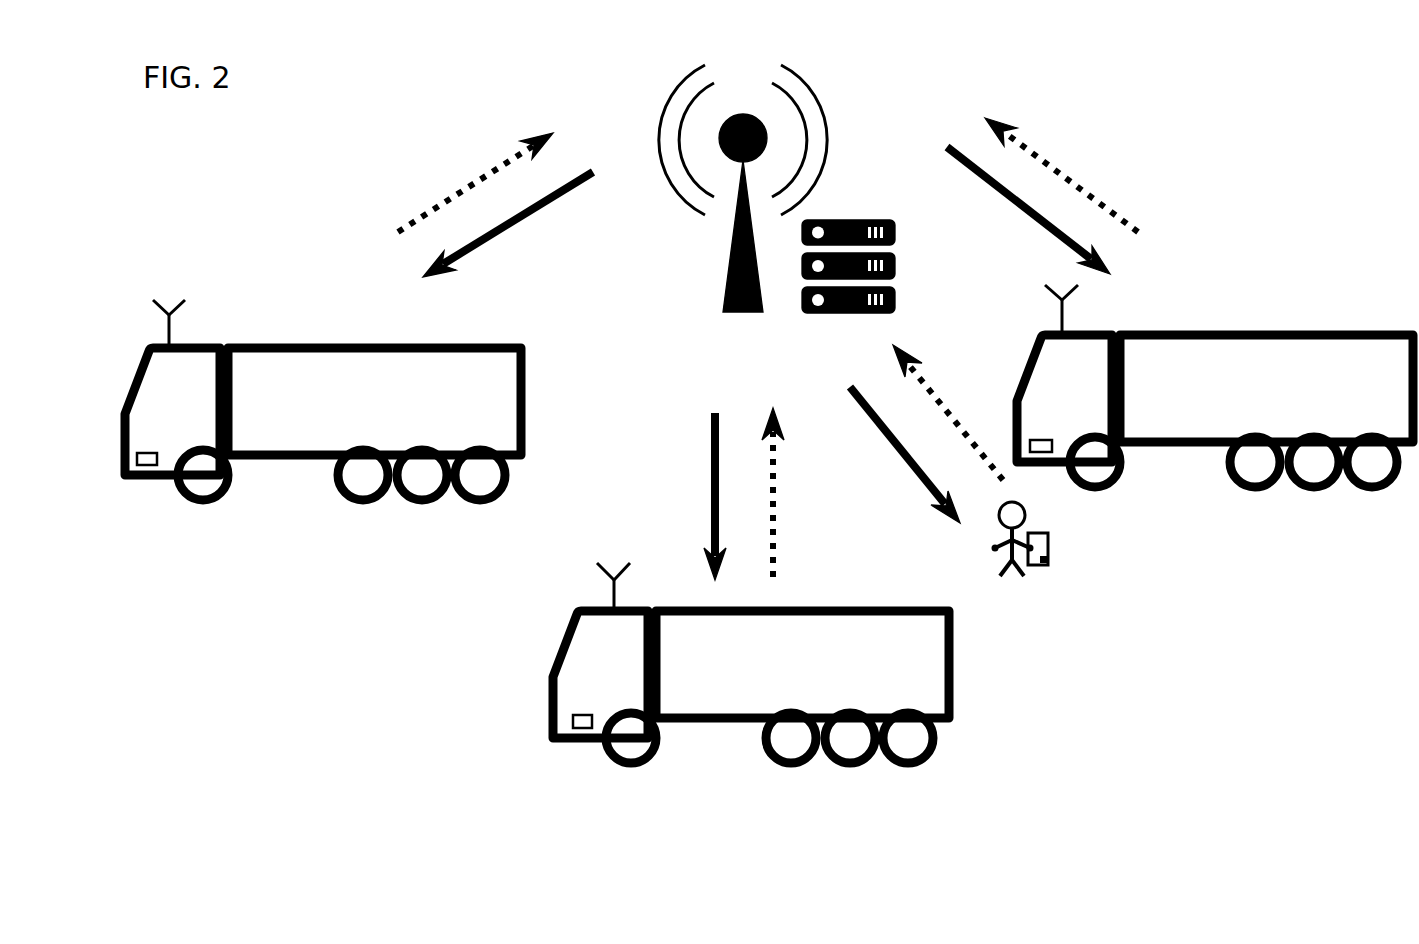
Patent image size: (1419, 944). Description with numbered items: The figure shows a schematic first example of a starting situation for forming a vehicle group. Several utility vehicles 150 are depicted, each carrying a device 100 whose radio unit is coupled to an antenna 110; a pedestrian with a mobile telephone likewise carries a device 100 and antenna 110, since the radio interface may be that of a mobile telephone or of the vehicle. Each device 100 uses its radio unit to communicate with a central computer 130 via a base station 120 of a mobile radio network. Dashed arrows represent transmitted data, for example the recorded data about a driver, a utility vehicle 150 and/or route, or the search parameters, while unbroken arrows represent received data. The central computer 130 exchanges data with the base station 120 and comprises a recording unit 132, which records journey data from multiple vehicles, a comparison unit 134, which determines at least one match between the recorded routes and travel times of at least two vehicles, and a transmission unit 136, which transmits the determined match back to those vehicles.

The device 100 is at (147, 465).
The antenna 110 is at (165, 300).
The base station 120 is at (765, 128).
The central computer 130 is at (886, 191).
The recording unit 132 is at (898, 234).
The comparison unit 134 is at (898, 267).
The transmission unit 136 is at (898, 300).
The utility vehicle 150 is at (193, 345).